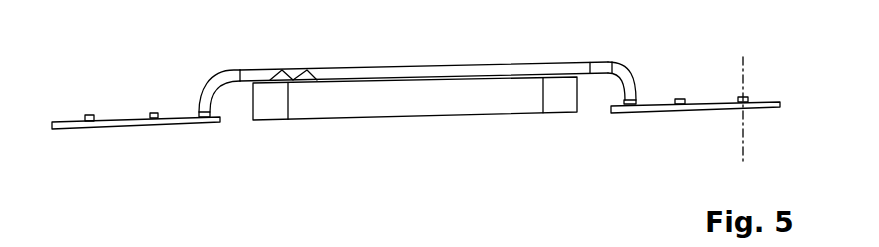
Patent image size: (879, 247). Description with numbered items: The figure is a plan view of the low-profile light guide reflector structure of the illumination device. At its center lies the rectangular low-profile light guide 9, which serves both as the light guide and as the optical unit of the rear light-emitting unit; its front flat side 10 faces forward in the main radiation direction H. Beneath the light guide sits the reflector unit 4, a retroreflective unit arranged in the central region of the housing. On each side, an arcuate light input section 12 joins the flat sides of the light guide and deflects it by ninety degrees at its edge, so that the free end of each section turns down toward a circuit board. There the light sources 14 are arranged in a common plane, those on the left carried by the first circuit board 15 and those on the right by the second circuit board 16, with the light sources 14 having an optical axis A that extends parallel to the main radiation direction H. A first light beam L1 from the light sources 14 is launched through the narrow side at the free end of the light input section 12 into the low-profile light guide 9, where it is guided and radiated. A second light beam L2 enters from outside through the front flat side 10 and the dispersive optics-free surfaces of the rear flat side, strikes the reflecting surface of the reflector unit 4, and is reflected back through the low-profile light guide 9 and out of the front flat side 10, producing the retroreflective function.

The reflector unit 4 is at (388, 108).
The low-profile light guide 9 is at (510, 68).
The front flat side 10 is at (538, 62).
The light input section 12 is at (210, 100).
The light sources 14 is at (152, 112).
The first circuit board 15 is at (121, 128).
The second circuit board 16 is at (703, 105).
The main radiation direction H is at (173, 103).
The first light beam L1 is at (313, 76).
The second light beam L2 is at (437, 25).
The optical axis A is at (745, 72).